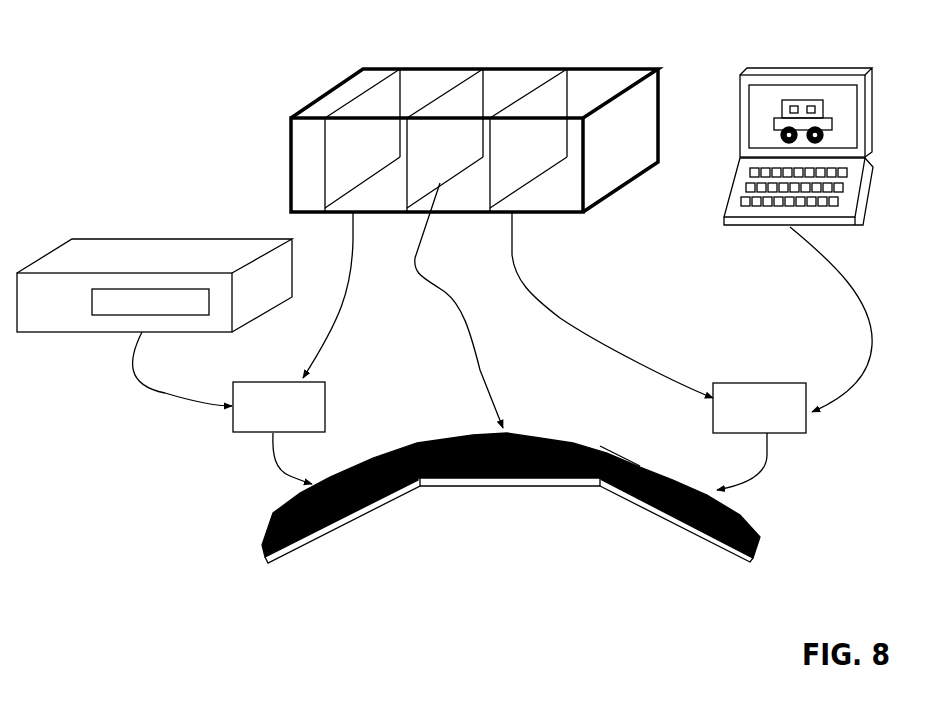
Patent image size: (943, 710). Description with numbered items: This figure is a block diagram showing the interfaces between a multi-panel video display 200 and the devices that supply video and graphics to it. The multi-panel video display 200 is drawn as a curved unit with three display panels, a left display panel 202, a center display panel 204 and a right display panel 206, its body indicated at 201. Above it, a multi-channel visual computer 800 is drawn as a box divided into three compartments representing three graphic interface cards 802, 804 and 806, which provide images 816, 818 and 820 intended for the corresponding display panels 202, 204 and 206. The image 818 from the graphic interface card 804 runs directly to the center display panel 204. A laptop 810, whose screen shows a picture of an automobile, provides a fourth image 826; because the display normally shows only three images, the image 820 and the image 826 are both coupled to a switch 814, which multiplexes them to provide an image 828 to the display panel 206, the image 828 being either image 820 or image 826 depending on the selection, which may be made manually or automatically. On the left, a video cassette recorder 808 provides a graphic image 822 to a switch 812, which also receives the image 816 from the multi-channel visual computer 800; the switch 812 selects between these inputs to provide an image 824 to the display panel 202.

The multi-panel video display 200 is at (485, 506).
The housing 201 is at (625, 452).
The display panel 202 is at (268, 563).
The display panel 204 is at (503, 486).
The display panel 206 is at (750, 562).
The multi-channel visual computer 800 is at (340, 86).
The graphic interface card 802 is at (393, 166).
The graphic interface card 804 is at (477, 166).
The graphic interface card 806 is at (562, 166).
The video cassette recorder 808 is at (88, 238).
The laptop 810 is at (772, 68).
The switch 812 is at (325, 398).
The switch 814 is at (806, 433).
The image 816 is at (338, 332).
The image 818 is at (415, 270).
The image 820 is at (532, 290).
The graphic image 822 is at (152, 392).
The image 824 is at (272, 460).
The image 826 is at (817, 252).
The image 828 is at (790, 433).